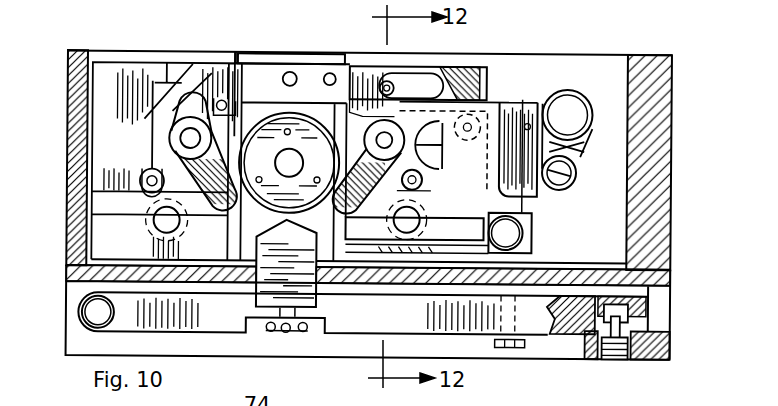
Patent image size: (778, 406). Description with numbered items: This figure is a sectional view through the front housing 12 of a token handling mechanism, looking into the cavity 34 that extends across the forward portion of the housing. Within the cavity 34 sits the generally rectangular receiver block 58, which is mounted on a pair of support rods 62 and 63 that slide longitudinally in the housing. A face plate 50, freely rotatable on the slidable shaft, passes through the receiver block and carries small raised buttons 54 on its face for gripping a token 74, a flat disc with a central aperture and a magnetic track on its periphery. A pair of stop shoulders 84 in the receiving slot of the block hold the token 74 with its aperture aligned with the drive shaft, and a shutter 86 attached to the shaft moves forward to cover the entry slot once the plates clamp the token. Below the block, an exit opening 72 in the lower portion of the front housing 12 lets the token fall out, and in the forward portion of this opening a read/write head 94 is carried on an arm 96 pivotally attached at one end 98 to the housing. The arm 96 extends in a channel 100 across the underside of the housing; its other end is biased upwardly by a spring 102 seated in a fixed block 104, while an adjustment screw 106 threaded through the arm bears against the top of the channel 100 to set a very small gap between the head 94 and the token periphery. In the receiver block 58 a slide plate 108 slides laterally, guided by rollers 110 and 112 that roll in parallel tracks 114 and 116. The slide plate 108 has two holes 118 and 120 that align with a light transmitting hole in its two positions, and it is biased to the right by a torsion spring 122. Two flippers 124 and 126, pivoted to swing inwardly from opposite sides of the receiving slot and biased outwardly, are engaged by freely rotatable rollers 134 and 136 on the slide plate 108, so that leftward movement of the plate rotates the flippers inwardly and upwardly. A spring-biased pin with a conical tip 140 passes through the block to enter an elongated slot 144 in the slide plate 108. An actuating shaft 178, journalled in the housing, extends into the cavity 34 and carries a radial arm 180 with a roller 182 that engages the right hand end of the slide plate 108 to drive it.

The front housing 12 is at (665, 85).
The cavity 34 is at (615, 245).
The face plate 50 is at (289, 162).
The raised buttons 54 is at (318, 173).
The receiver block 58 is at (458, 65).
The support rod 62 is at (428, 224).
The support rod 63 is at (152, 231).
The exit opening 72 is at (330, 273).
The token 74 is at (311, 216).
The stop shoulders 84 is at (262, 186).
The shutter 86 is at (253, 55).
The read/write head 94 is at (270, 233).
The arm 96 is at (372, 325).
The pivot end 98 is at (80, 310).
The channel 100 is at (448, 285).
The spring 102 is at (630, 324).
The fixed block 104 is at (643, 350).
The adjustment screw 106 is at (520, 345).
The slide plate 108 is at (512, 97).
The roller 110 is at (492, 149).
The roller 112 is at (142, 175).
The track 114 is at (437, 128).
The track 116 is at (108, 188).
The hole 118 is at (289, 72).
The hole 120 is at (328, 73).
The torsion spring 122 is at (523, 224).
The flipper 124 is at (416, 235).
The flipper 126 is at (226, 198).
The roller 134 is at (421, 189).
The roller 136 is at (157, 81).
The conical tip 140 is at (384, 79).
The elongated slot 144 is at (412, 72).
The actuating shaft 178 is at (570, 105).
The radial arm 180 is at (580, 149).
The roller 182 is at (570, 187).